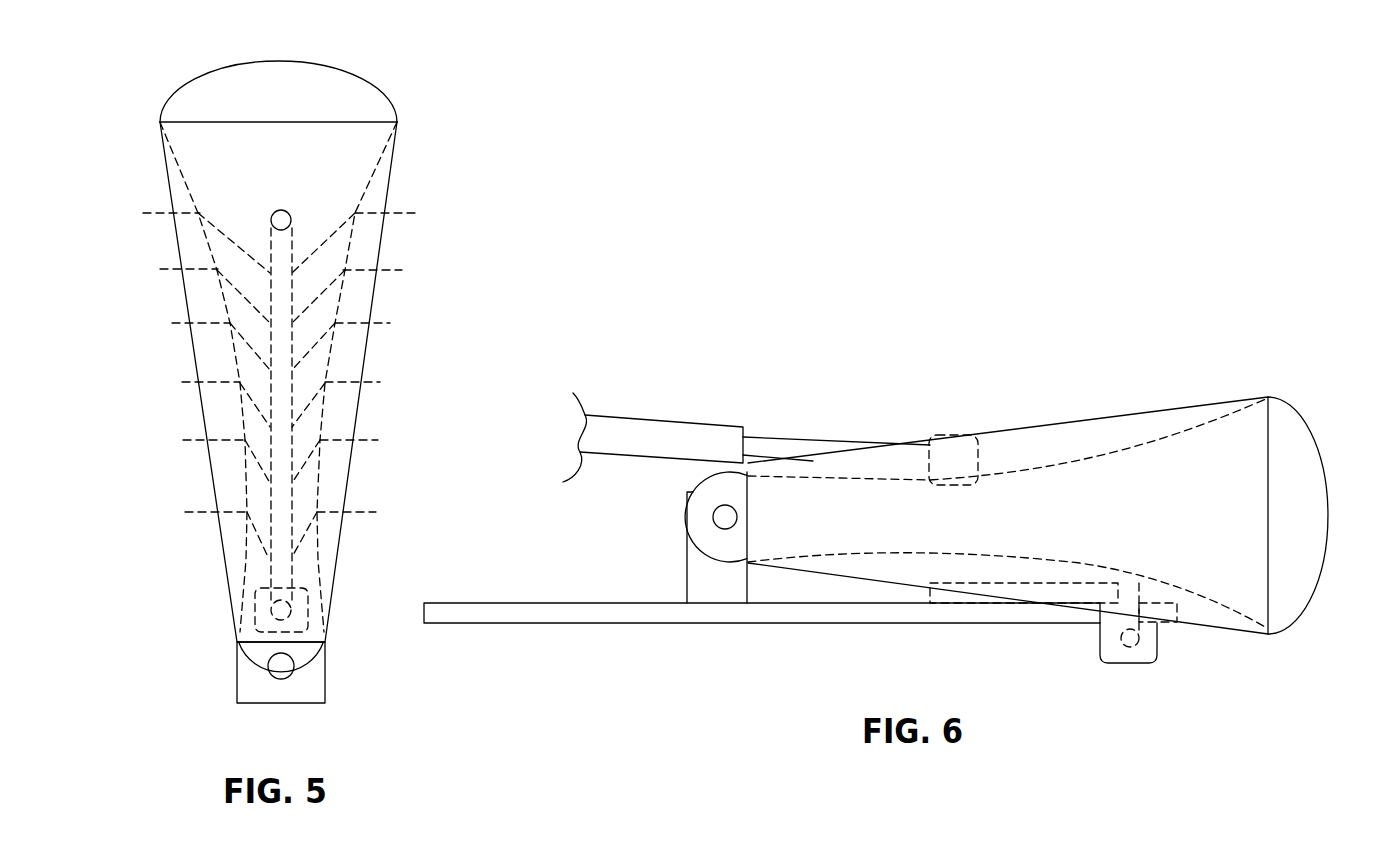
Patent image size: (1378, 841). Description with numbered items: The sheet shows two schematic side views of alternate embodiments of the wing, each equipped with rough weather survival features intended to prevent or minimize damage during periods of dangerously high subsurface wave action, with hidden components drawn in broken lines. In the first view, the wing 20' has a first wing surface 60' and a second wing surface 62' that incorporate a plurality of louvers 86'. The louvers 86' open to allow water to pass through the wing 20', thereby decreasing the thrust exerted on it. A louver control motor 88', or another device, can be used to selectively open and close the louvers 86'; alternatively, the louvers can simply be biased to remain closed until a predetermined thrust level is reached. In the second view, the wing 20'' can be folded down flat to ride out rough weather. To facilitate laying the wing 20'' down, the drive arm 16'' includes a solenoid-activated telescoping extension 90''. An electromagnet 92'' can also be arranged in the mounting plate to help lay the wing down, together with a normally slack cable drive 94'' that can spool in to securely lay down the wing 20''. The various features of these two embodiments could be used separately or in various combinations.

In FIG. 5, the wing 20' is at (374, 382).
In FIG. 5, the second wing surface 62' is at (324, 377).
In FIG. 5, the first wing surface 60' is at (228, 385).
In FIG. 5, the louvers 86' is at (290, 362).
In FIG. 5, the louver control motor 88' is at (236, 621).
In FIG. 6, the wing 20'' is at (876, 456).
In FIG. 6, the drive arm 16'' is at (653, 416).
In FIG. 6, the solenoid-activated telescoping extension 90'' is at (860, 408).
In FIG. 6, the electromagnet 92'' is at (1009, 625).
In FIG. 6, the normally slack cable drive 94'' is at (1170, 664).